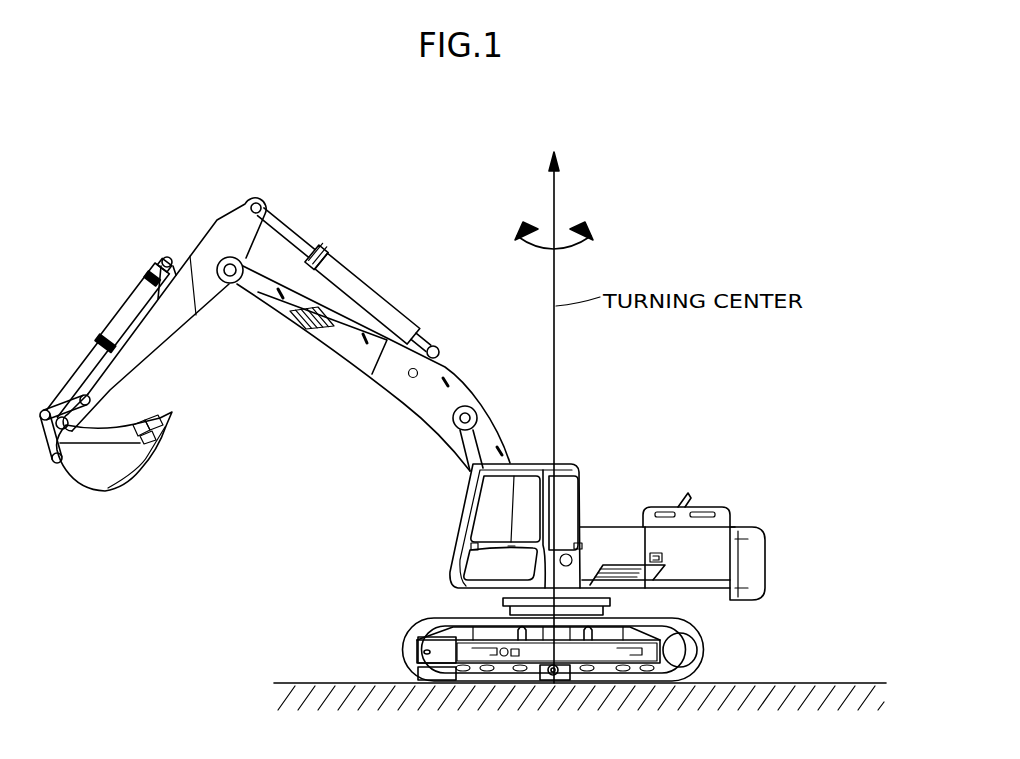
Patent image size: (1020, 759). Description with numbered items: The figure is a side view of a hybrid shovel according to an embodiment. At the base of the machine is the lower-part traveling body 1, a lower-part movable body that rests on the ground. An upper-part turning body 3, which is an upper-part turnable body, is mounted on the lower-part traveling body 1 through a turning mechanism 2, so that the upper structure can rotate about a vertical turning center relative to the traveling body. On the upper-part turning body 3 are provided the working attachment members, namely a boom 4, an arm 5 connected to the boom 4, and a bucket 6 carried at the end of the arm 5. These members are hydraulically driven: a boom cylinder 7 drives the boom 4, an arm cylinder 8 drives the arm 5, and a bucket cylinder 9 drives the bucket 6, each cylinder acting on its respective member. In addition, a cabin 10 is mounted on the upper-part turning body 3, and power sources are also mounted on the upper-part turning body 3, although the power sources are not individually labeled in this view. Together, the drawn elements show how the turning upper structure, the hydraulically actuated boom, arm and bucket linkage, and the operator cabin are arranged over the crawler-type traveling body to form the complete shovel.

The lower-part traveling body 1 is at (402, 647).
The turning mechanism 2 is at (612, 605).
The upper-part turning body 3 is at (618, 525).
The boom 4 is at (398, 387).
The arm 5 is at (173, 322).
The bucket 6 is at (108, 489).
The boom cylinder 7 is at (467, 458).
The arm cylinder 8 is at (388, 306).
The bucket cylinder 9 is at (128, 313).
The cabin 10 is at (570, 463).